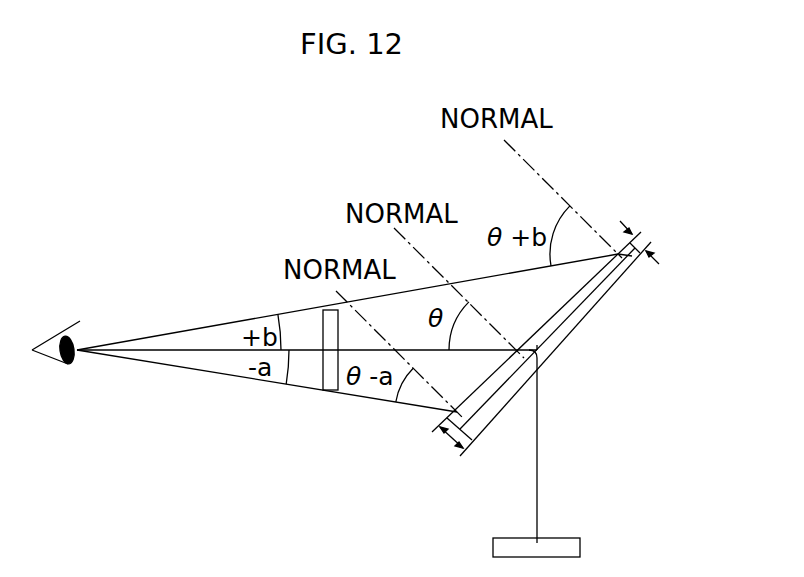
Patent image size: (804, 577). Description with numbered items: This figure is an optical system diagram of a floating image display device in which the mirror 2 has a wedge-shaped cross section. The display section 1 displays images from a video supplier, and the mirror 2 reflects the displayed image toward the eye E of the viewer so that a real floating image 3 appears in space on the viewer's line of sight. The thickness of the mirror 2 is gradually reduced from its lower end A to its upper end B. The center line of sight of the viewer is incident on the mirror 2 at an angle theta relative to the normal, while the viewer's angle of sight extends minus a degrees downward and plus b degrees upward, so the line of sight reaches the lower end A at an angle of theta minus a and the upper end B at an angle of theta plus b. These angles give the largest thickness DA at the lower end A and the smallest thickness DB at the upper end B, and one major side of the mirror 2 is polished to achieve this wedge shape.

The display section 1 is at (580, 546).
The mirror 2 is at (572, 313).
The floating image 3 is at (334, 392).
The eye E is at (60, 338).
The lower end A is at (478, 448).
The upper end B is at (638, 264).
The thickness DA is at (437, 447).
The thickness DB is at (651, 239).